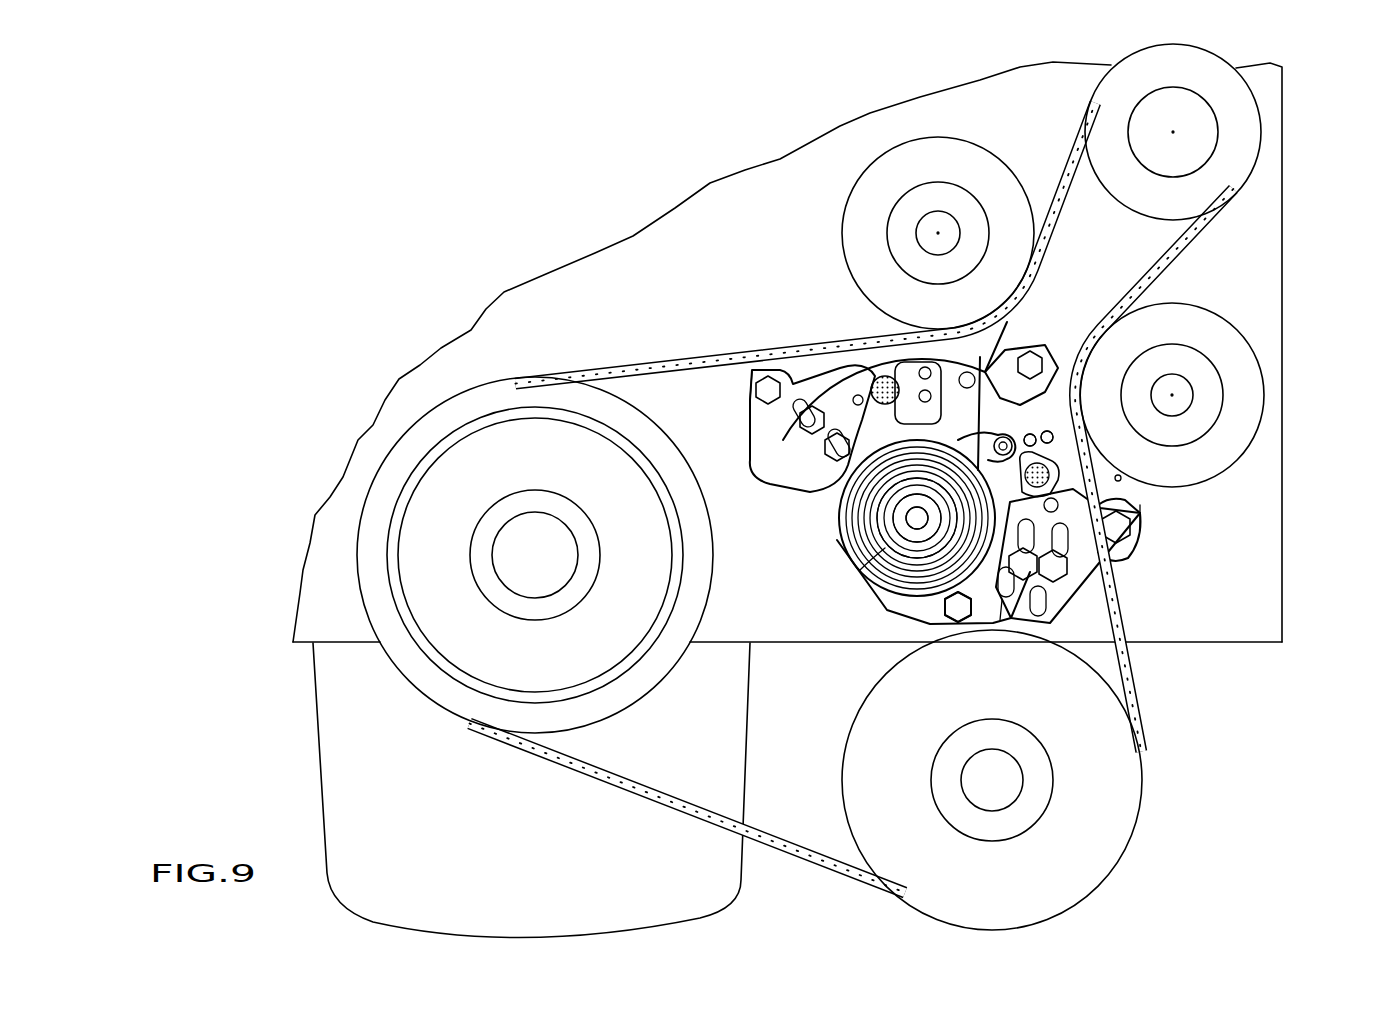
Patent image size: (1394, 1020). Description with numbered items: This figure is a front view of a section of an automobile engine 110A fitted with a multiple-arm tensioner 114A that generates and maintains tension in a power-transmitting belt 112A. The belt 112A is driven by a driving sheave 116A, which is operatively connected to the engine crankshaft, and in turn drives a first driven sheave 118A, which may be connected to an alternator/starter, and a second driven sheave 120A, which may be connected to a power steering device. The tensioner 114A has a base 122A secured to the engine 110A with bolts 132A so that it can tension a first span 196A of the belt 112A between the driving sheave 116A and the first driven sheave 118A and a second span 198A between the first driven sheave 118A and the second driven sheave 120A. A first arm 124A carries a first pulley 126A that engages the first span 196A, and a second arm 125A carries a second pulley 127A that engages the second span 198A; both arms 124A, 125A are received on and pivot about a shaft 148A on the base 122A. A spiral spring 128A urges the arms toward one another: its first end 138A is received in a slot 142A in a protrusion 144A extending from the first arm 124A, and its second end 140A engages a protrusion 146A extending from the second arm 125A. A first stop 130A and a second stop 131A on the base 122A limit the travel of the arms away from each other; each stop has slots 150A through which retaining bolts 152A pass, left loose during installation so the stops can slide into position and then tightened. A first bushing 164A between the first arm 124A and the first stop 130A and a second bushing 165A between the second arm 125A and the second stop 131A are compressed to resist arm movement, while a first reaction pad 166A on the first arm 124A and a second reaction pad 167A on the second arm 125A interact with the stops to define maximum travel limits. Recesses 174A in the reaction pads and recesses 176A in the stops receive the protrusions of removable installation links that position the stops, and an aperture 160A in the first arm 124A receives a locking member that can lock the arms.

The engine 110A is at (283, 675).
The power-transmitting belt 112A is at (1128, 660).
The tensioner 114A is at (800, 584).
The driving sheave 116A is at (360, 593).
The first driven sheave 118A is at (1260, 129).
The second driven sheave 120A is at (1141, 778).
The base 122A is at (1142, 560).
The first arm 124A is at (878, 330).
The second arm 125A is at (1118, 480).
The first pulley 126A is at (851, 199).
The second pulley 127A is at (1262, 384).
The spring 128A is at (907, 578).
The first stop 130A is at (792, 475).
The second stop 131A is at (1002, 598).
The bolts 132A is at (756, 390).
The first end of spring 138A is at (903, 545).
The second end of spring 140A is at (1010, 431).
The slot 142A is at (893, 512).
The protrusion 144A is at (905, 500).
The protrusion 146A is at (1003, 437).
The shaft 148A is at (882, 523).
The slot 150A is at (823, 460).
The retaining bolt 152A is at (798, 440).
The aperture 160A is at (1004, 343).
The first bushing 164A is at (880, 373).
The second bushing 165A is at (1057, 468).
The first reaction pad 166A is at (910, 347).
The second reaction pad 167A is at (1052, 446).
The recesses 174A is at (940, 394).
The recesses 176A is at (852, 375).
The first span 196A is at (660, 363).
The second span 198A is at (1120, 620).